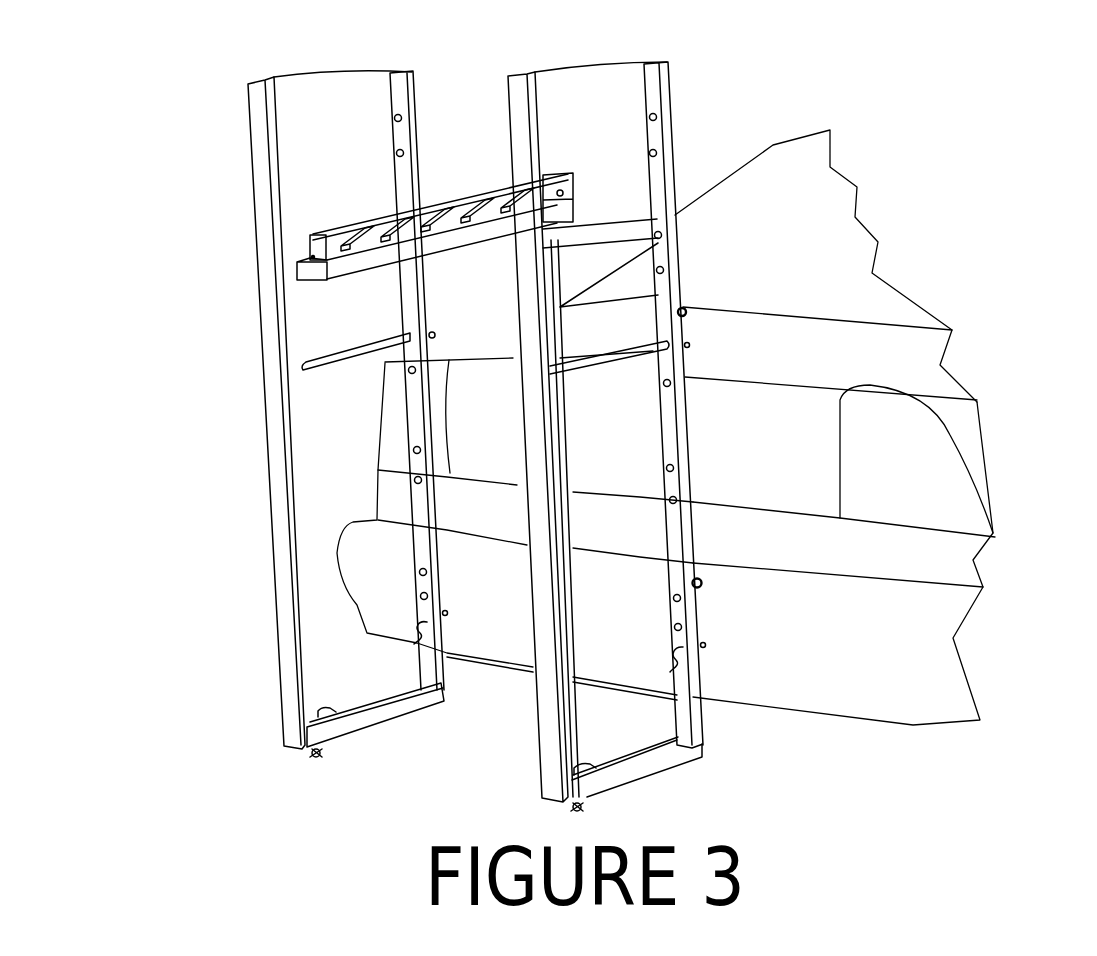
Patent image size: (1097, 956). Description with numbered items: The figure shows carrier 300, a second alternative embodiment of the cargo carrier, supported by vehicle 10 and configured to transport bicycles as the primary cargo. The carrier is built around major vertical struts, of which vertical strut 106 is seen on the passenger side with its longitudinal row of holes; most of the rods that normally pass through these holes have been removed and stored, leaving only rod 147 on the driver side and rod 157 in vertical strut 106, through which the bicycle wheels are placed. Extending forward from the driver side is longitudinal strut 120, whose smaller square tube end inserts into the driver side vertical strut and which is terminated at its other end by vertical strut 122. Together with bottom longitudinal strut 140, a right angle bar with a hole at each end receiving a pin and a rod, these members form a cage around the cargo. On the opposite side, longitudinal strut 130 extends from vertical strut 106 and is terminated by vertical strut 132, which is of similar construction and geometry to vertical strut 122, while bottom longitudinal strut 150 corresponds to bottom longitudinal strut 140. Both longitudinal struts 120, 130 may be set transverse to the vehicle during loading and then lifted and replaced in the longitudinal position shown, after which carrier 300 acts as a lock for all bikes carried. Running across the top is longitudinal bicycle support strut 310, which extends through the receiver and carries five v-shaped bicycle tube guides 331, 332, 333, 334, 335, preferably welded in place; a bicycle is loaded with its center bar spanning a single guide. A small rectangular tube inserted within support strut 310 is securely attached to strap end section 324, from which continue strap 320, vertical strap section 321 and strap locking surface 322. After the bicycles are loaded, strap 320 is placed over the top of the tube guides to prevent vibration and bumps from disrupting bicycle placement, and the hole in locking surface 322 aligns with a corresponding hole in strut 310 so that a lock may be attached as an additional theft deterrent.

The vehicle 10 is at (705, 427).
The vertical strut 106 is at (660, 289).
The longitudinal strut 120 is at (280, 78).
The vertical strut 122 is at (288, 652).
The longitudinal strut 130 is at (672, 62).
The vertical strut 132 is at (543, 733).
The bottom longitudinal strut 140 is at (367, 725).
The rod 147 is at (300, 370).
The bottom longitudinal strut 150 is at (657, 763).
The rod 157 is at (668, 346).
The carrier 300 is at (557, 135).
The longitudinal bicycle support strut 310 is at (333, 267).
The strap 320 is at (317, 237).
The vertical strap section 321 is at (313, 247).
The strap locking surface 322 is at (297, 260).
The strap end section 324 is at (562, 200).
The v-shaped bicycle tube guide 331 is at (497, 200).
The v-shaped bicycle tube guide 332 is at (436, 206).
The v-shaped bicycle tube guide 333 is at (407, 218).
The v-shaped bicycle tube guide 334 is at (412, 228).
The v-shaped bicycle tube guide 335 is at (368, 255).